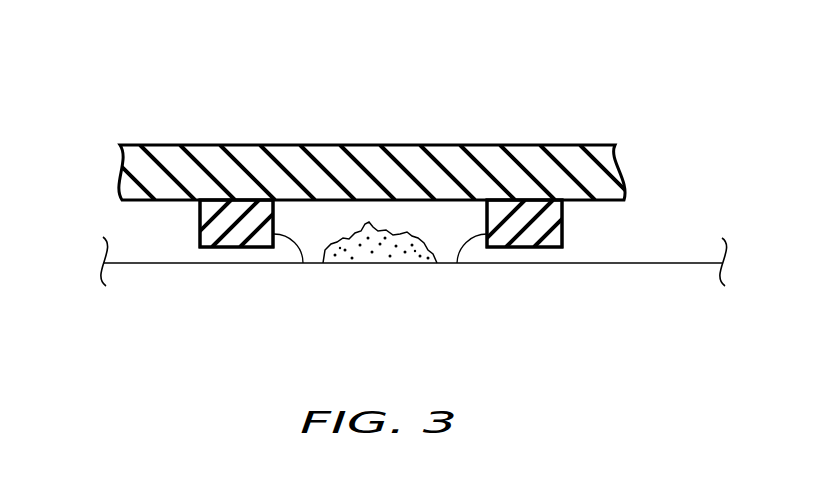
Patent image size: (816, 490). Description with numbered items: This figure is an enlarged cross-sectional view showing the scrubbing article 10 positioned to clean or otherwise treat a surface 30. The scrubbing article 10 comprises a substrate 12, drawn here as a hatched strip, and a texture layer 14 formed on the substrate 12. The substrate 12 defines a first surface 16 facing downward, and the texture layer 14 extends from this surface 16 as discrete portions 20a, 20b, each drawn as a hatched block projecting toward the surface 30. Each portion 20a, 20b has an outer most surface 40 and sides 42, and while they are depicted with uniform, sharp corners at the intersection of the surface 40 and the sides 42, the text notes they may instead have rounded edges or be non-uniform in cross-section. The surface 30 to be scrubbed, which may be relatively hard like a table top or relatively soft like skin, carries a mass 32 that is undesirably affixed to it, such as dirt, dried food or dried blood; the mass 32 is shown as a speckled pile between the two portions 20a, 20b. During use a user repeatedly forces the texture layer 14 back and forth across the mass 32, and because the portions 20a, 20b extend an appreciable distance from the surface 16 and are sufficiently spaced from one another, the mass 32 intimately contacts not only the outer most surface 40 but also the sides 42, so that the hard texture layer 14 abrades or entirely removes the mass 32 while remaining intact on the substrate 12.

The scrubbing article 10 is at (407, 112).
The substrate 12 is at (198, 142).
The texture layer 14 is at (187, 232).
The first surface 16 is at (137, 203).
The portion of texture layer 20a is at (528, 222).
The portion of texture layer 20b is at (252, 220).
The surface 30 is at (687, 260).
The mass 32 is at (375, 252).
The outer most surface 40 is at (238, 249).
The sides 42 is at (301, 265).